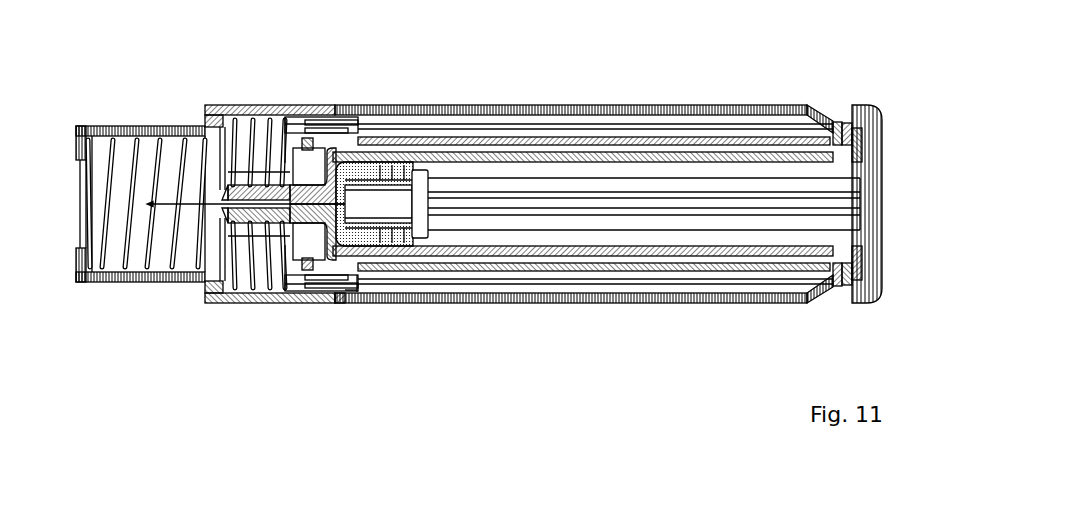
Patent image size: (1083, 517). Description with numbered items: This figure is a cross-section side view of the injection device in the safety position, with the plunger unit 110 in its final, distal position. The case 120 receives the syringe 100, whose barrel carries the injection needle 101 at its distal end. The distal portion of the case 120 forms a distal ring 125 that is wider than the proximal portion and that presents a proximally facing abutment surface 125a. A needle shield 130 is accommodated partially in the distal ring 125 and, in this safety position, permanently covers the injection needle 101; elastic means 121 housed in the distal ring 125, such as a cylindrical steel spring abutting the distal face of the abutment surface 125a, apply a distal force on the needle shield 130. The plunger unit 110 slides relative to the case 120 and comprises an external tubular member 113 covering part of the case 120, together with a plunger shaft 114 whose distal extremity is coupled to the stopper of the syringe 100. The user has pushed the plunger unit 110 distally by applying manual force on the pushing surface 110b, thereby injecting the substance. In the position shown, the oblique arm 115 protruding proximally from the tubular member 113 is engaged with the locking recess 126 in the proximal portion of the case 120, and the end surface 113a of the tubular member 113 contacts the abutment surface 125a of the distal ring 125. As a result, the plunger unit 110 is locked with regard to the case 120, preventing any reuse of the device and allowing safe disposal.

The syringe 100 is at (482, 152).
The injection needle 101 is at (194, 202).
The plunger unit 110 is at (498, 297).
The pushing surface 110b is at (880, 195).
The external tubular member 113 is at (690, 298).
The end surface 113a is at (339, 292).
The plunger shaft 114 is at (503, 202).
The oblique arm 115 is at (795, 118).
The case 120 is at (433, 140).
The elastic means 121 is at (118, 262).
The distal ring 125 is at (280, 107).
The abutment surface 125a is at (335, 290).
The locking recess 126 is at (833, 123).
The needle shield 130 is at (102, 280).